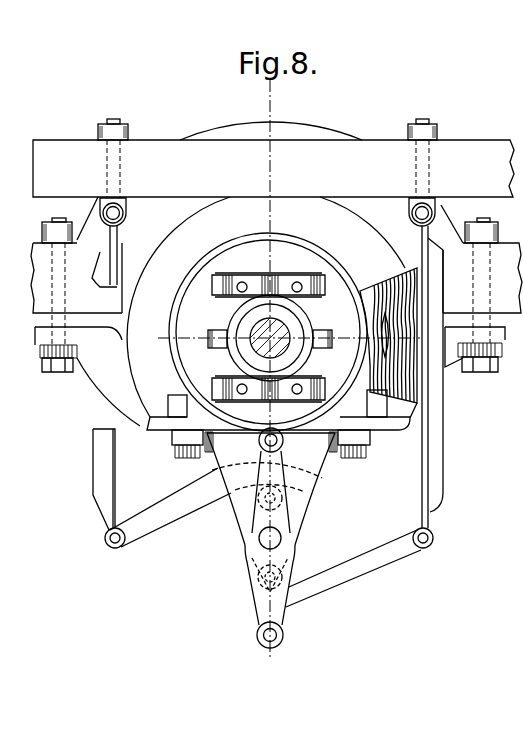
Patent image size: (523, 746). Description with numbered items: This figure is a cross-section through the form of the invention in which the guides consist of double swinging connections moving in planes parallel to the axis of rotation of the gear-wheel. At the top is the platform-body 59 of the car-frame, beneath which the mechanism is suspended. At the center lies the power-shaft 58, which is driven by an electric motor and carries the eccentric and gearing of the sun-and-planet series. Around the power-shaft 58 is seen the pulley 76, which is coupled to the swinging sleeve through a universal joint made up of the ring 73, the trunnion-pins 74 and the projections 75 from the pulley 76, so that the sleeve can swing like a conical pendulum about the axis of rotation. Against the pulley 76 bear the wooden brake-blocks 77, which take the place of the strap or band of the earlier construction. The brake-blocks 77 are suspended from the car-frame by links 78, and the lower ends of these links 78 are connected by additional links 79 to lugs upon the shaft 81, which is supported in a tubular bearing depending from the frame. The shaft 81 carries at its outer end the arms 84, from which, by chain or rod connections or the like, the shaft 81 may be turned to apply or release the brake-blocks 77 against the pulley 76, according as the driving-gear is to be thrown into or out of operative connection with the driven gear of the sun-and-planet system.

The power-shaft 58 is at (270, 338).
The platform-body 59 is at (273, 158).
The ring 73 is at (303, 317).
The trunnion-pins 74 is at (276, 275).
The projections 75 is at (254, 283).
The pulley 76 is at (268, 332).
The wooden brake-blocks 77 is at (388, 286).
The links 78 is at (106, 242).
The additional links 79 is at (269, 537).
The shaft 81 is at (296, 524).
The arms 84 is at (315, 477).